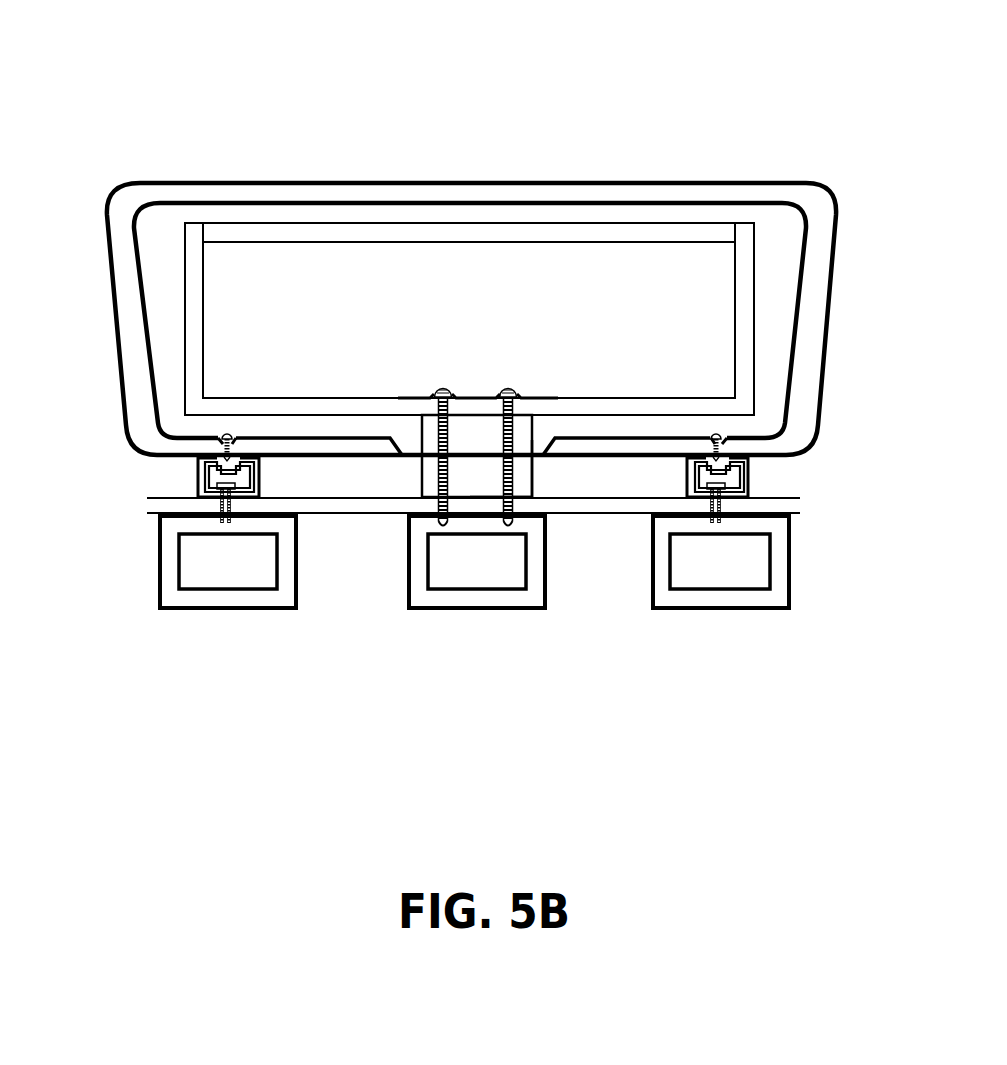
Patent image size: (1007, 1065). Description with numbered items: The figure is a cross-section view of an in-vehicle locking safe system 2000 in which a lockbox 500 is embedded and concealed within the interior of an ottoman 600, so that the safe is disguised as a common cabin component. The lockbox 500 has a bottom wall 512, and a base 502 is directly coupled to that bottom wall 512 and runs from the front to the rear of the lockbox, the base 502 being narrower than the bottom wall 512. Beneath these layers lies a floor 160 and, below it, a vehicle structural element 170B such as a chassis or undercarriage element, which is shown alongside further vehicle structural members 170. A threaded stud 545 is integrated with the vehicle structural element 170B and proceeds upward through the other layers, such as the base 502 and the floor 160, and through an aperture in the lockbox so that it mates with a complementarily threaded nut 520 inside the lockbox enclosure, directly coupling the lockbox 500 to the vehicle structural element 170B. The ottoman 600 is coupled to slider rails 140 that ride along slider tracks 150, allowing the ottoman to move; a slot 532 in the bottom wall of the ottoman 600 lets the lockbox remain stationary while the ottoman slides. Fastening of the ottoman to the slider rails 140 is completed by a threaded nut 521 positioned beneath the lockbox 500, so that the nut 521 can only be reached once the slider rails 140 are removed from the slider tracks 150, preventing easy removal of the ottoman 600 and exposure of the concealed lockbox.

The in-vehicle locking safe system 2000 is at (106, 73).
The ottoman 600 is at (208, 192).
The lockbox 500 is at (347, 232).
The bottom wall 512 is at (352, 402).
The nut 520 is at (444, 443).
The stud 545 is at (455, 438).
The threaded nut 521 is at (222, 436).
The slider rails 140 is at (198, 466).
The slider tracks 150 is at (198, 484).
The floor 160 is at (305, 507).
The support member 170 is at (184, 610).
The vehicle structural element 170B is at (433, 612).
The slot 532 is at (541, 466).
The base 502 is at (533, 478).